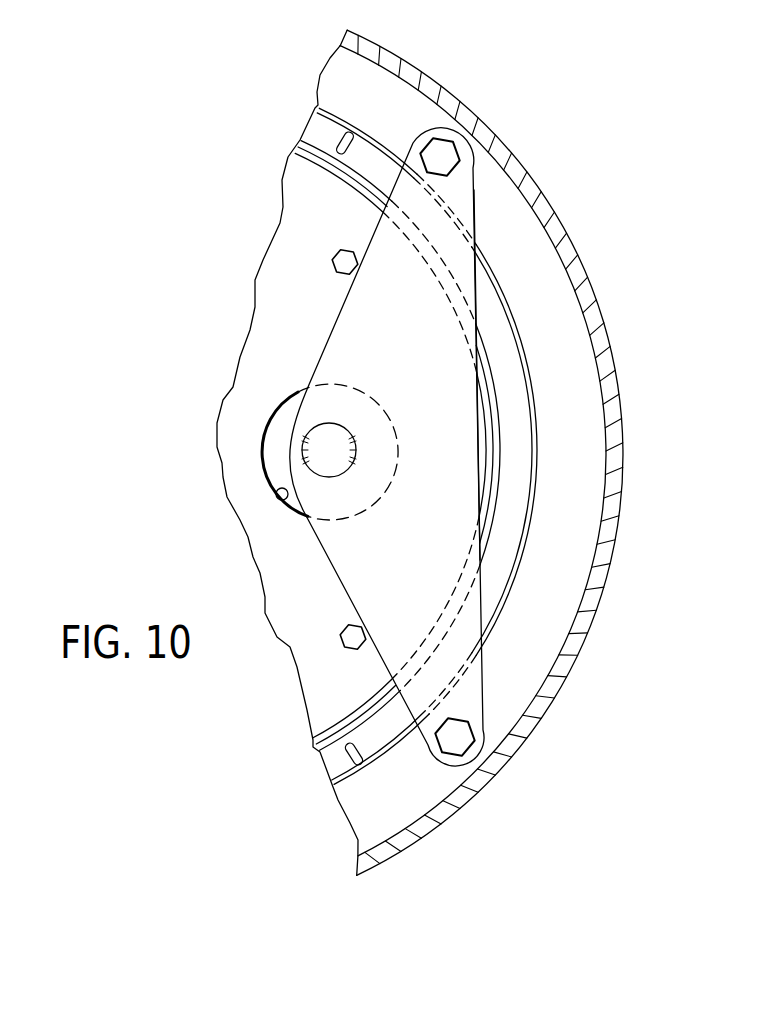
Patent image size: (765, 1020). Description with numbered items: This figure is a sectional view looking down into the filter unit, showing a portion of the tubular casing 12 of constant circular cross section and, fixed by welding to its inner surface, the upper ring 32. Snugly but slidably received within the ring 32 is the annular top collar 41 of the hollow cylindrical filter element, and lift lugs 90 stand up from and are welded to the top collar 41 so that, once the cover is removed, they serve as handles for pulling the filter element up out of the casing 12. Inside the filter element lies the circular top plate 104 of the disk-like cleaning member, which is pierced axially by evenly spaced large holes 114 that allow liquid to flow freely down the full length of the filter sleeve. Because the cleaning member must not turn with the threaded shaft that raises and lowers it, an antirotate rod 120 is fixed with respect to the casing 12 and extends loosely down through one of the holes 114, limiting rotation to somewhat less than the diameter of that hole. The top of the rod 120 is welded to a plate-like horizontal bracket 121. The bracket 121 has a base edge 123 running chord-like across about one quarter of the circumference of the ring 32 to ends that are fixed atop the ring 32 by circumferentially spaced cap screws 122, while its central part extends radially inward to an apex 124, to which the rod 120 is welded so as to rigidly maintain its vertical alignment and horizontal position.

The casing 12 is at (582, 287).
The upper ring 32 is at (358, 70).
The top collar 41 is at (413, 143).
The lift lugs 90 is at (340, 142).
The top plate 104 is at (327, 185).
The holes 114 is at (284, 500).
The antirotate rod 120 is at (323, 452).
The bracket 121 is at (392, 245).
The cap screws 122 is at (445, 158).
The base edge 123 is at (476, 220).
The apex 124 is at (310, 420).